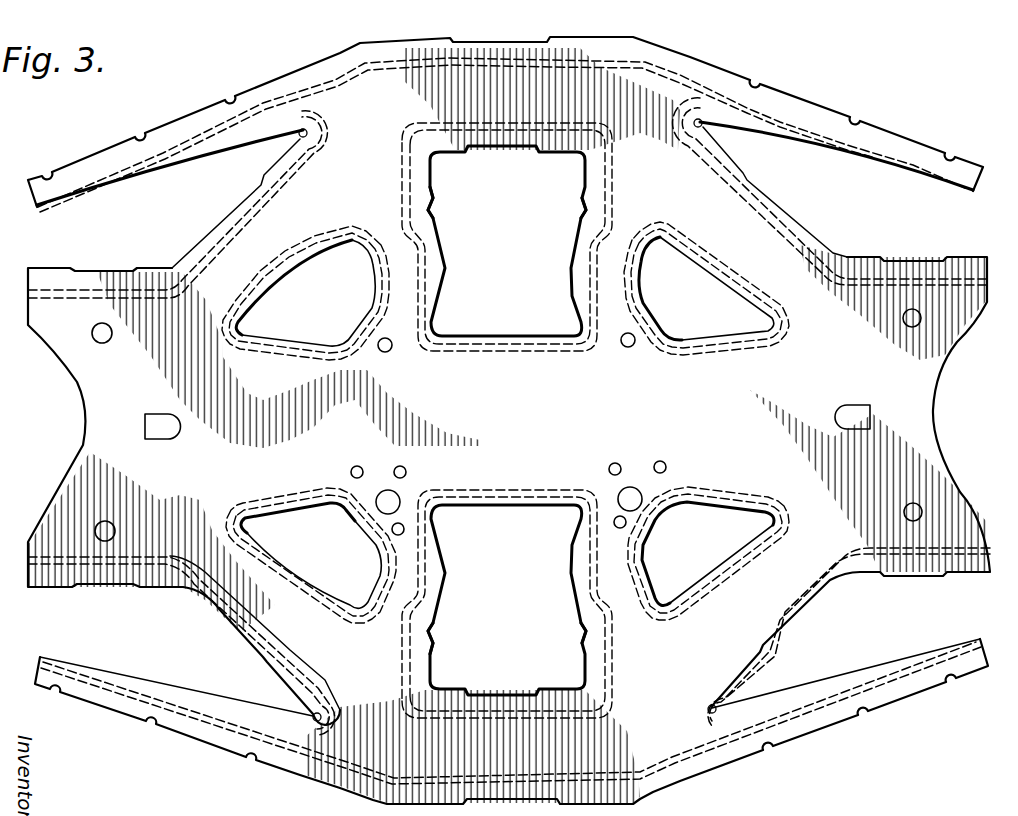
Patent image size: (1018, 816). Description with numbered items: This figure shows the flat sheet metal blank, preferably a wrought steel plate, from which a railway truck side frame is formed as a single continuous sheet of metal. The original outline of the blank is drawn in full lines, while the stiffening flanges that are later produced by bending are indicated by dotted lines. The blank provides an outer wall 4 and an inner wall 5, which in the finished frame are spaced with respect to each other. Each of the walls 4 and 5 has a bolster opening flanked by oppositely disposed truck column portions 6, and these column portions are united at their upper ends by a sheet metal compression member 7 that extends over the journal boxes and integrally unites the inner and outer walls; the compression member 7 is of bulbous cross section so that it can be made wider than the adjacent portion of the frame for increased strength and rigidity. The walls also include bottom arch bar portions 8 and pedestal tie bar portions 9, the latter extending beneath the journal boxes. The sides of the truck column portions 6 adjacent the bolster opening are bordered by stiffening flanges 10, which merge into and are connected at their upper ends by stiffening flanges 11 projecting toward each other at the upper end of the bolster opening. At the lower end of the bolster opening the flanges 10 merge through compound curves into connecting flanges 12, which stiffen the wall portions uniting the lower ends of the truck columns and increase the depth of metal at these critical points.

The outer wall 4 is at (505, 124).
The inner wall 5 is at (511, 721).
The truck column portion 6 is at (402, 294).
The compression member 7 is at (509, 416).
The bottom arch bar portion 8 is at (270, 262).
The pedestal tie bar portion 9 is at (118, 165).
The stiffening flange 10 is at (430, 243).
The stiffening flange 11 is at (487, 339).
The connecting flange 12 is at (510, 145).